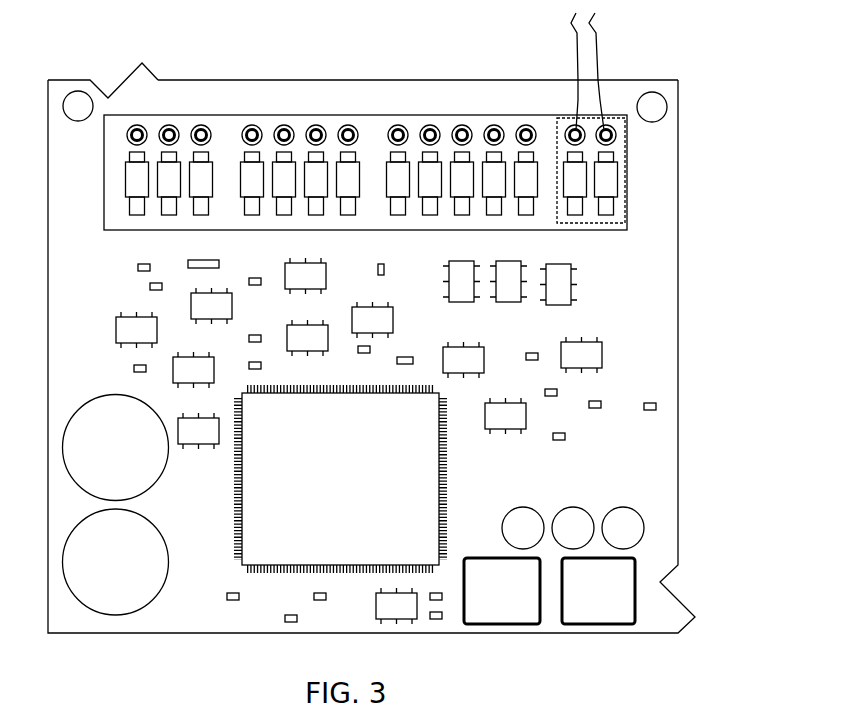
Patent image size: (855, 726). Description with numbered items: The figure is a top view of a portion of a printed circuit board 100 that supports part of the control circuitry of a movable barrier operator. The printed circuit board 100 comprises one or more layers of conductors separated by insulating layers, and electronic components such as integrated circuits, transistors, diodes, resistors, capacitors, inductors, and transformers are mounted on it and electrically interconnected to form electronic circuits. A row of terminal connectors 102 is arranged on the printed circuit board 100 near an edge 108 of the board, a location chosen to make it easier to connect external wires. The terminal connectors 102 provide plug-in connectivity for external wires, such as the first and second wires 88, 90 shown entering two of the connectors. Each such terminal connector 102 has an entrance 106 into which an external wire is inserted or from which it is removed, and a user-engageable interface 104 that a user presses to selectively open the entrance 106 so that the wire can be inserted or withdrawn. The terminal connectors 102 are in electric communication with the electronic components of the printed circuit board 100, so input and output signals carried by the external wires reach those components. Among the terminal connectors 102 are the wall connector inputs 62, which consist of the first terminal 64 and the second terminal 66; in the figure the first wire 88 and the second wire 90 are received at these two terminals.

The printed circuit board 100 is at (663, 362).
The terminal connectors 102 is at (222, 113).
The user-engageable interface 104 is at (612, 187).
The entrance 106 is at (617, 134).
The edge 108 is at (469, 70).
The wall connector inputs 62 is at (628, 217).
The first terminal 64 is at (564, 108).
The second terminal 66 is at (611, 108).
The first wire 88 is at (575, 43).
The second wire 90 is at (596, 44).